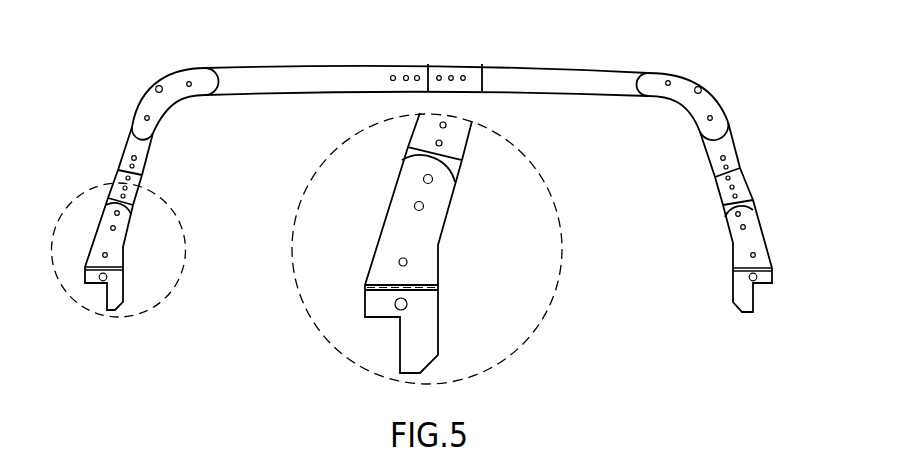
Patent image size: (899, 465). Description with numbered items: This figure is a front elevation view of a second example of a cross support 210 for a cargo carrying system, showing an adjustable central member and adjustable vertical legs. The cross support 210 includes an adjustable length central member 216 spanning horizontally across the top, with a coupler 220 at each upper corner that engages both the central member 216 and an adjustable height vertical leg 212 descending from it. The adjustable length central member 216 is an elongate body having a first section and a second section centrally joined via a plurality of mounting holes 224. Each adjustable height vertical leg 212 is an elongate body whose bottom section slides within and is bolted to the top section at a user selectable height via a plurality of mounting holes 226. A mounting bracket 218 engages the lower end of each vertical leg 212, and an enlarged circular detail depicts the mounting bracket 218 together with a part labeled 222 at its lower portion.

The cross support 210 is at (125, 37).
The adjustable height vertical leg 212 is at (128, 137).
The adjustable length central member 216 is at (316, 66).
The mounting bracket 218 is at (762, 240).
The coupler 220 is at (170, 76).
The strap / fastener band 222 is at (437, 288).
The mounting holes 224 is at (413, 70).
The mounting holes 226 is at (738, 173).